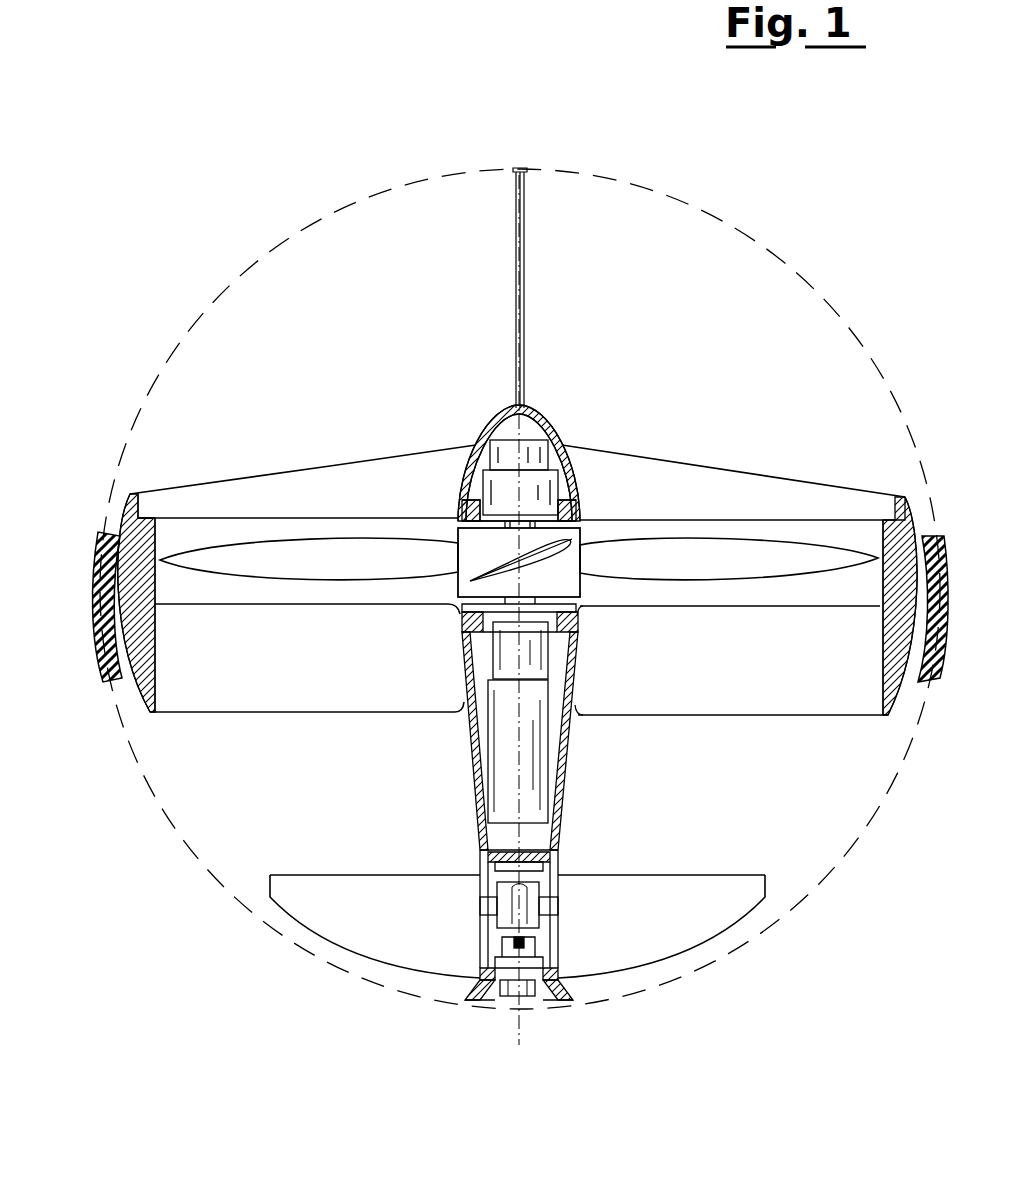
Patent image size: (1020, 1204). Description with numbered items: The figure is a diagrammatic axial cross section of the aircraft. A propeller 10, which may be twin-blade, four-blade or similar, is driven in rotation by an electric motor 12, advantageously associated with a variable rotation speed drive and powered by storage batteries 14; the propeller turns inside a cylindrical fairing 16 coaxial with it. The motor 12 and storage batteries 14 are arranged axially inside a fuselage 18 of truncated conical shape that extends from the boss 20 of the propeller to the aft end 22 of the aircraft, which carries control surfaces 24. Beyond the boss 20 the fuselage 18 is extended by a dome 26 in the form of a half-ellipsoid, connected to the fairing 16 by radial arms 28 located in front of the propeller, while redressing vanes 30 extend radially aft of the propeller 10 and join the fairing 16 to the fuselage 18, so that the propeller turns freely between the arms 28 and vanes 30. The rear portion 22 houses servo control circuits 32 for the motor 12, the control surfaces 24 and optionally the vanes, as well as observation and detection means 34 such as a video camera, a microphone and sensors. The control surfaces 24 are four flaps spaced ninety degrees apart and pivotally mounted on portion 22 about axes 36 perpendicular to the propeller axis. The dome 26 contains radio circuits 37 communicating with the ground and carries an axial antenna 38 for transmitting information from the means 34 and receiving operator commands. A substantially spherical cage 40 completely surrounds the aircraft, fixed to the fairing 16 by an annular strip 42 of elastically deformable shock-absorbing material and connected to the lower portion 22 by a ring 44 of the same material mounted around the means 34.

The propeller 10 is at (215, 532).
The electric motor 12 is at (500, 650).
The storage batteries 14 is at (500, 745).
The cylindrical fairing 16 is at (125, 707).
The fuselage 18 is at (573, 788).
The boss 20 is at (580, 545).
The aft end 22 is at (560, 950).
The control surfaces 24 is at (300, 875).
The dome 26 is at (555, 432).
The radial arms 28 is at (398, 450).
The redressing vanes 30 is at (240, 716).
The servo control circuits 32 is at (533, 892).
The observation and detection means 34 is at (512, 990).
The axes 36 is at (487, 905).
The radio circuits 37 is at (560, 487).
The axial antenna 38 is at (526, 288).
The spherical cage 40 is at (320, 215).
The annular strip 42 is at (98, 632).
The ring 44 is at (560, 998).